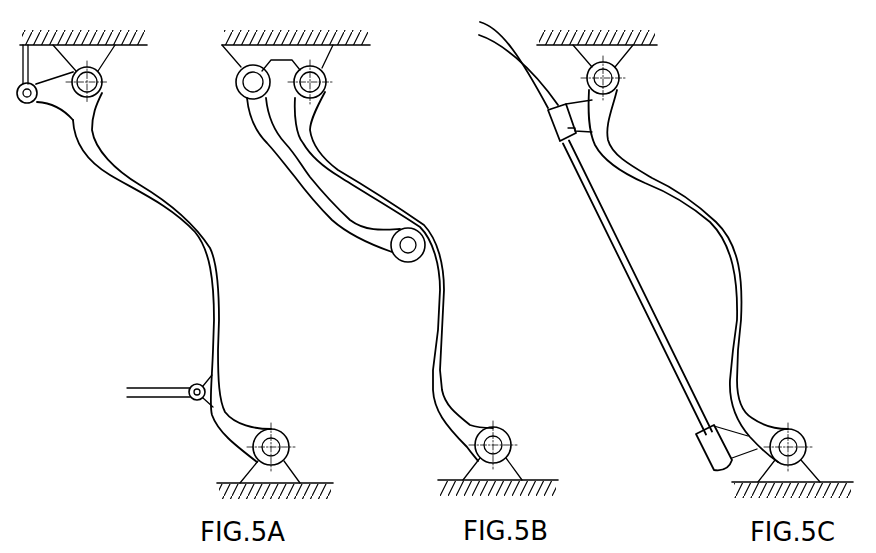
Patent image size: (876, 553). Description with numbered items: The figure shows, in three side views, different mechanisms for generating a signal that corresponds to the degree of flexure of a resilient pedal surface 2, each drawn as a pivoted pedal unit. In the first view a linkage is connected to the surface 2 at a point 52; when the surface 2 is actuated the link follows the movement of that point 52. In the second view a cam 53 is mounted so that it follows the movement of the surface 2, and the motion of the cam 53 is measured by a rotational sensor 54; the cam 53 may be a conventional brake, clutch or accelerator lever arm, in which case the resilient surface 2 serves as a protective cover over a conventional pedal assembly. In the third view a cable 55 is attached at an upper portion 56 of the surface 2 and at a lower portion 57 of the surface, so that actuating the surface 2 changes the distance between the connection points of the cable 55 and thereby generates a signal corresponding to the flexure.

In FIG. 5A, the resilient pedal surface 2 is at (172, 190).
In FIG. 5B, the resilient pedal surface 2 is at (409, 190).
In FIG. 5C, the resilient pedal surface 2 is at (708, 190).
In FIG. 5A, the point of the surface 52 is at (195, 385).
In FIG. 5B, the cam 53 is at (384, 248).
In FIG. 5B, the rotational sensor 54 is at (238, 86).
In FIG. 5C, the cable 55 is at (595, 228).
In FIG. 5C, the upper portion of the surface 56 is at (558, 121).
In FIG. 5C, the lower clamp 57 is at (714, 447).